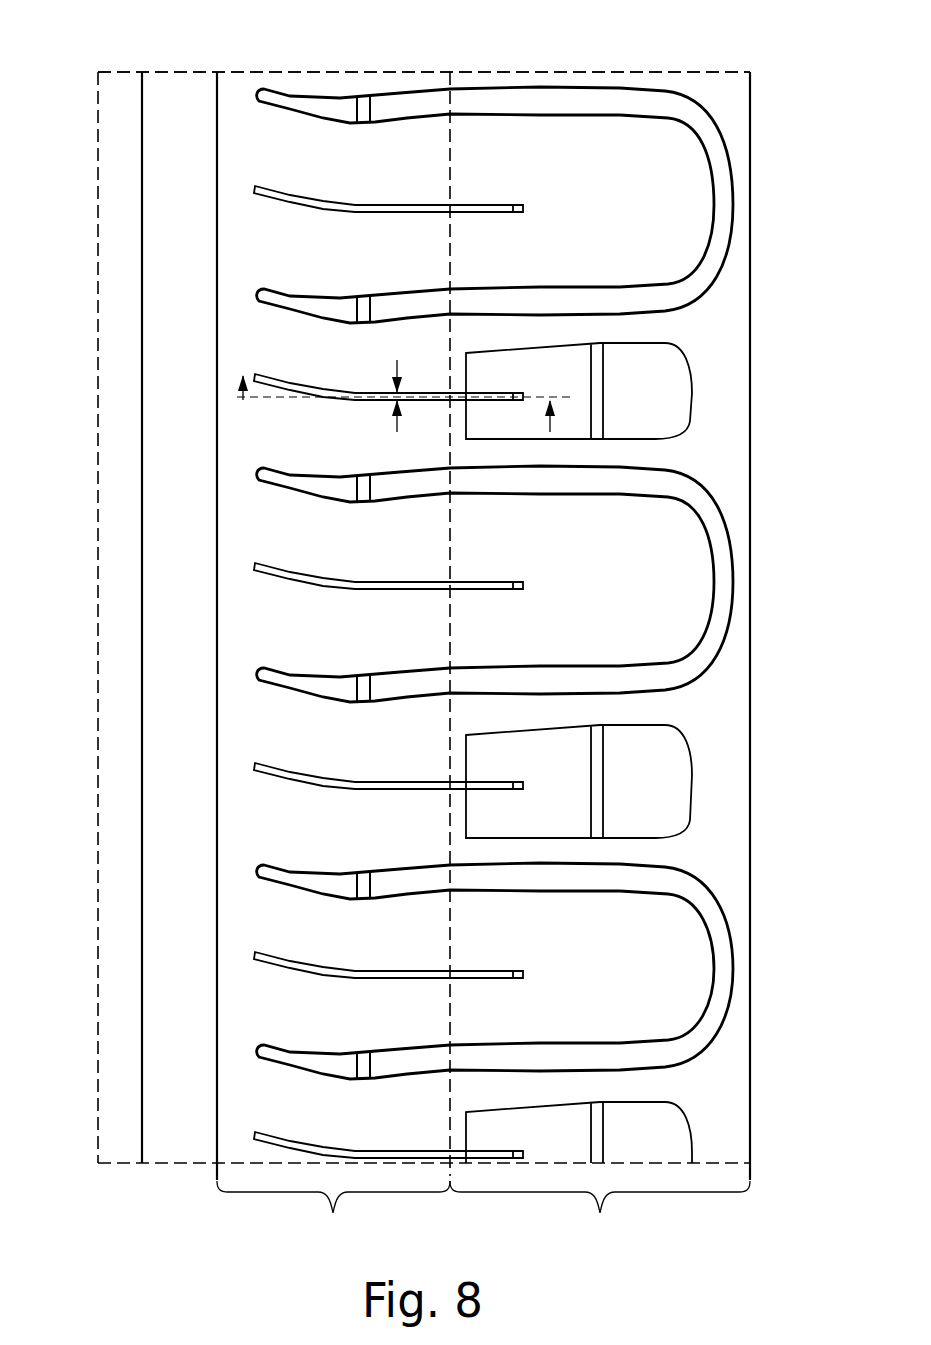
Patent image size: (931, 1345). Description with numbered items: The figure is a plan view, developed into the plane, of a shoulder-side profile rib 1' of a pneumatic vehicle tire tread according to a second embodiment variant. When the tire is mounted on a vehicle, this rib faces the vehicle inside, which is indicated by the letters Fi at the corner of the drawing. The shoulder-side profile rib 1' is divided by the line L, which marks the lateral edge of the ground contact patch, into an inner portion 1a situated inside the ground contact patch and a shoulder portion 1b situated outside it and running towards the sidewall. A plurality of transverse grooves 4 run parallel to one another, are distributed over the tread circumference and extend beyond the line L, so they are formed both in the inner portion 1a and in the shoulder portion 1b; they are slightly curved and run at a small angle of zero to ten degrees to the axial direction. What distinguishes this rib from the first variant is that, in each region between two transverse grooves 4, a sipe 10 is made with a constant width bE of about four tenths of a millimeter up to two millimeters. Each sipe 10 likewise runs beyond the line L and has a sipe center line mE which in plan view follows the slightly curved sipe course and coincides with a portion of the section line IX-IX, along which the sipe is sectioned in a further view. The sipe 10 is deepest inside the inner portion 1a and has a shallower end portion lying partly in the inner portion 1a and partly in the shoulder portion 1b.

The sipe 10 is at (355, 204).
The shoulder-side profile rib 1' is at (424, 36).
The transverse grooves 4 is at (574, 104).
The vehicle inside Fi is at (762, 603).
The sipe width bE is at (400, 384).
The sipe center line mE is at (339, 401).
The section line IX- IX is at (398, 423).
The inner portion 1a is at (333, 1213).
The line L is at (455, 648).
The shoulder portion 1b is at (600, 1217).